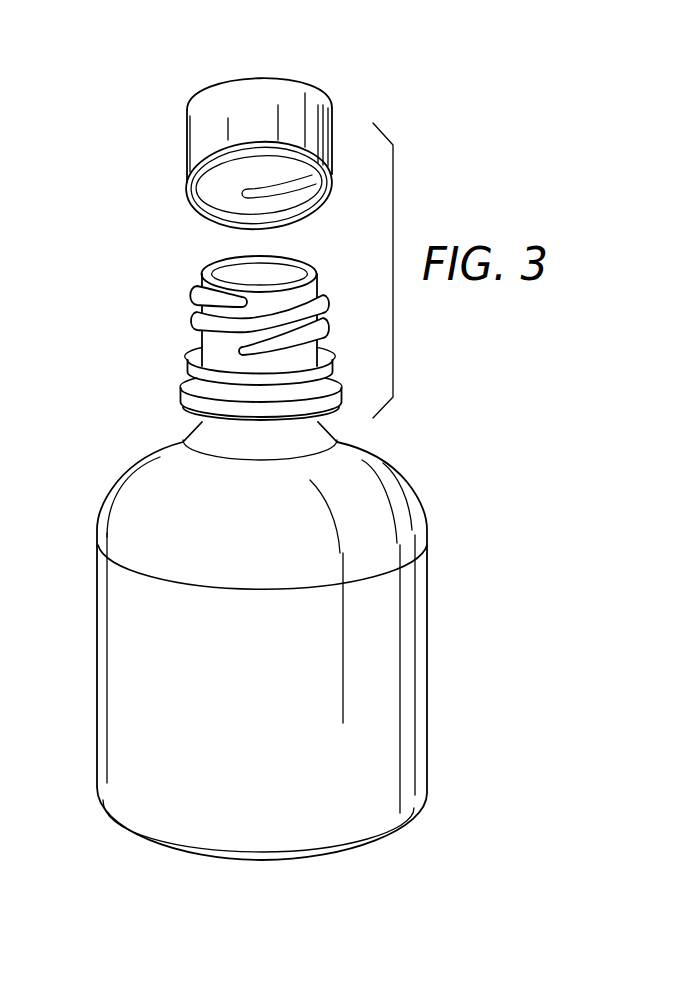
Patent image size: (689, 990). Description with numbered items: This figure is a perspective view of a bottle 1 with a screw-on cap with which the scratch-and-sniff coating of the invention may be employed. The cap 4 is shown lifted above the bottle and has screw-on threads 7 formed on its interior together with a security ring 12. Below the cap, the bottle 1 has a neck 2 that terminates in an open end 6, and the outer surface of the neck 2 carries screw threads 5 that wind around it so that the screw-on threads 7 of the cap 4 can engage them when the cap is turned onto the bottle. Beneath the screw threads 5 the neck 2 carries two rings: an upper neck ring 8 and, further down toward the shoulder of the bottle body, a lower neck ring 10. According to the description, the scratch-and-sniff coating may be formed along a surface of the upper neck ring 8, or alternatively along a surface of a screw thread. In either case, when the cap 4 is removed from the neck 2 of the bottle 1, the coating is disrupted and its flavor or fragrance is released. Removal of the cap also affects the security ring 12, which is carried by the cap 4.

The bottle 1 is at (223, 543).
The neck 2 is at (241, 296).
The cap 4 is at (257, 136).
The screw threads 5 is at (323, 328).
The open end 6 is at (277, 277).
The screw-on threads 7 is at (257, 190).
The upper neck ring 8 is at (195, 358).
The lower neck ring 10 is at (183, 395).
The security ring 12 is at (218, 203).